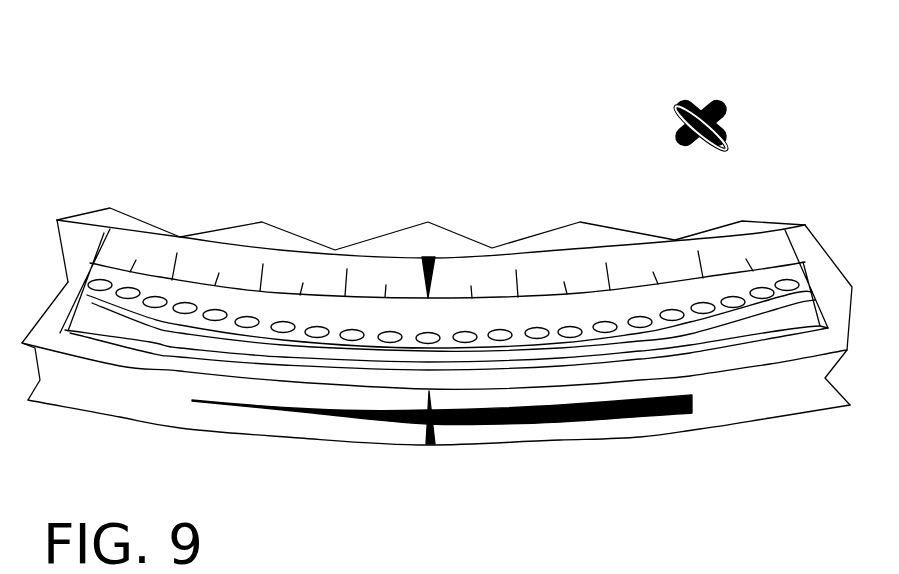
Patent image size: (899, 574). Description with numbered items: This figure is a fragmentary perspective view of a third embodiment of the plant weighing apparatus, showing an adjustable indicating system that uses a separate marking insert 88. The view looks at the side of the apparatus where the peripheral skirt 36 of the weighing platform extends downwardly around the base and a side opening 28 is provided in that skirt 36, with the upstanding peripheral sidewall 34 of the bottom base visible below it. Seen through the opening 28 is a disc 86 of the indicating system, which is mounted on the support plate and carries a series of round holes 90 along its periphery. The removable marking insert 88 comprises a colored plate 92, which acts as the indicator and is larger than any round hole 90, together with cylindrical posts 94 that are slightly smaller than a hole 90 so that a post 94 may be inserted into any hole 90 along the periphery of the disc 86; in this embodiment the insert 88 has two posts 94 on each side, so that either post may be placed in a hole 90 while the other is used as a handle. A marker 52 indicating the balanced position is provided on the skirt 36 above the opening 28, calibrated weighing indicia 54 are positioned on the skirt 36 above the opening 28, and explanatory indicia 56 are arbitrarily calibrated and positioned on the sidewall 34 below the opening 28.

The side opening 28 is at (101, 323).
The peripheral sidewall 34 is at (62, 388).
The peripheral skirt 36 is at (82, 240).
The marker 52 is at (425, 290).
The weighing indicia 54 is at (530, 283).
The explanatory indicia 56 is at (510, 425).
The disc 86 is at (223, 303).
The marking insert 88 is at (696, 102).
The round holes 90 is at (317, 327).
The colored plate 92 is at (683, 107).
The cylindrical post 94 is at (670, 140).